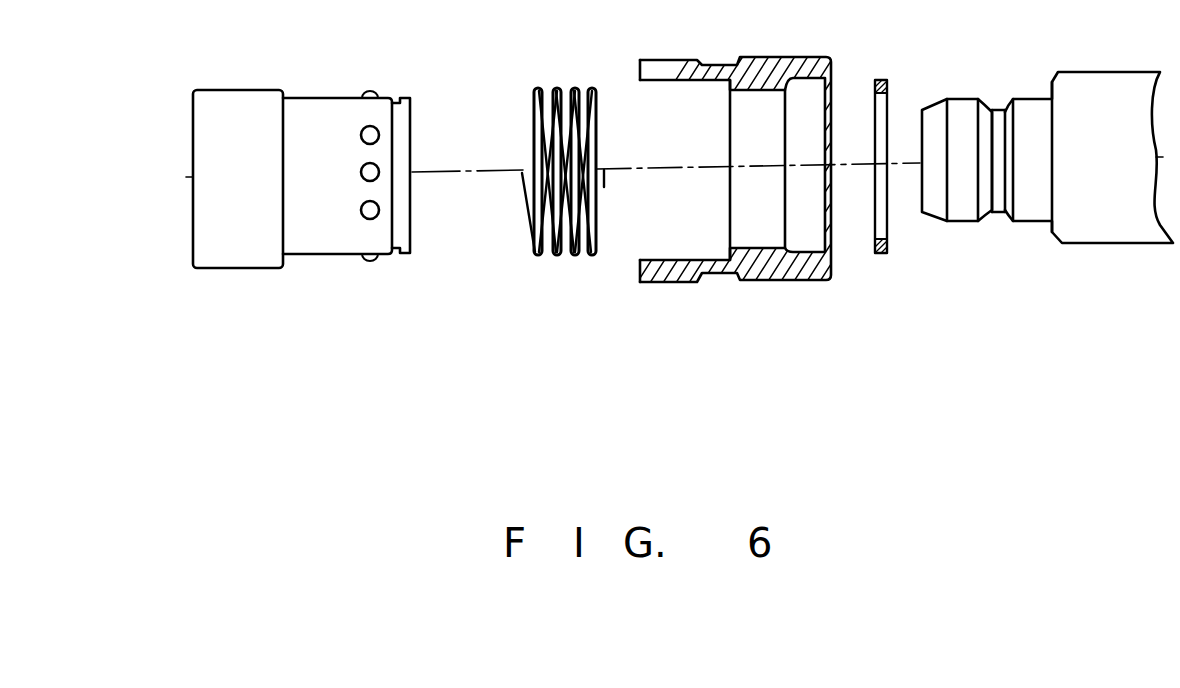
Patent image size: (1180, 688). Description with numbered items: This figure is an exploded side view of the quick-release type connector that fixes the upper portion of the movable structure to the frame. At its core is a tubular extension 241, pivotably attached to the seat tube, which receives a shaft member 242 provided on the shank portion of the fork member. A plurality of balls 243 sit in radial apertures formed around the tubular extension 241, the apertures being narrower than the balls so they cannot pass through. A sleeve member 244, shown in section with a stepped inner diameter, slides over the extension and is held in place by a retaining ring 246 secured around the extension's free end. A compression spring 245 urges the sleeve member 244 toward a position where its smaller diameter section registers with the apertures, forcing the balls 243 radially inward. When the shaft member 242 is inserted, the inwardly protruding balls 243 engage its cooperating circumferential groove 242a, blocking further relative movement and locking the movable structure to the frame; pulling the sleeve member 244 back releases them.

The tubular extension 241 is at (247, 243).
The balls 243 is at (365, 220).
The compression spring 245 is at (557, 78).
The sleeve member 244 is at (680, 270).
The retaining ring 246 is at (885, 82).
The shaft member 242 is at (1033, 200).
The circumferential groove 242a is at (993, 213).